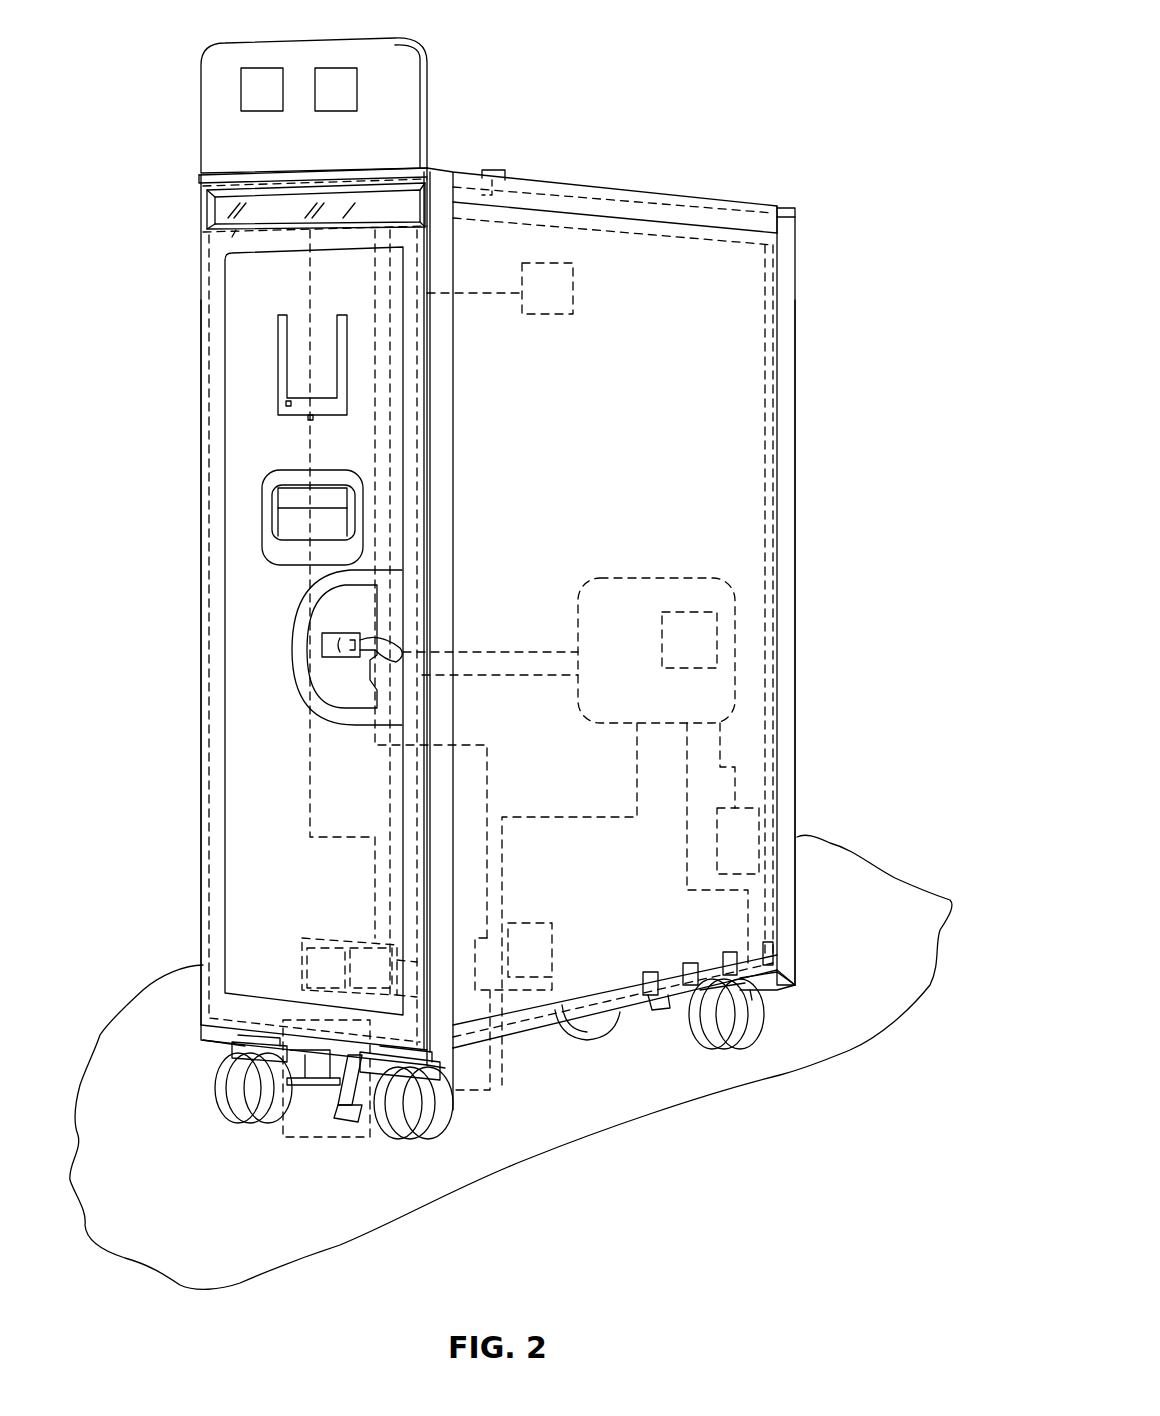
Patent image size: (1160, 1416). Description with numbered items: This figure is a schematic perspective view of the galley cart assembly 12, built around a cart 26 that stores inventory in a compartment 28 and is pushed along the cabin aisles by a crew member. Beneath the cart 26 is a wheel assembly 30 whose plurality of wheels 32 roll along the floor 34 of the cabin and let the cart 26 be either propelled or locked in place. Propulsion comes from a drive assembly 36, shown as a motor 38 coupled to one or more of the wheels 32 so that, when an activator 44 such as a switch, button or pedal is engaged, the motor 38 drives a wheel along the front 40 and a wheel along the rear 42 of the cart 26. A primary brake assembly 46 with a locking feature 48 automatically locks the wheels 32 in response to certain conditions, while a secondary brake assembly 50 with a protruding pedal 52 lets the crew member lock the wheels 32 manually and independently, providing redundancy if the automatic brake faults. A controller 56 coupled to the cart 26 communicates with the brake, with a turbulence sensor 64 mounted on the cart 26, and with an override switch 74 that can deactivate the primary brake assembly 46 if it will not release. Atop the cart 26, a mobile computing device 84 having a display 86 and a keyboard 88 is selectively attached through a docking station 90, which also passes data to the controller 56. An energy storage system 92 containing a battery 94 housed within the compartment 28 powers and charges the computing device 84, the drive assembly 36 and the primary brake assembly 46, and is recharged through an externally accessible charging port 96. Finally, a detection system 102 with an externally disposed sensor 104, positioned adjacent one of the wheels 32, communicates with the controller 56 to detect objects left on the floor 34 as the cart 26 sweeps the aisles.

The galley cart assembly 12 is at (822, 32).
The cart 26 is at (797, 235).
The compartment 28 is at (201, 641).
The wheel assembly 30 is at (252, 1198).
The plurality of wheels 32 is at (232, 1123).
The floor 34 is at (948, 905).
The drive assembly 36 is at (327, 938).
The motor 38 is at (388, 986).
The front 40 is at (227, 805).
The rear 42 is at (797, 660).
The activator 44 is at (343, 984).
The primary brake assembly 46 is at (530, 923).
The locking feature 48 is at (546, 967).
The secondary brake assembly 50 is at (320, 1140).
The pedal 52 is at (345, 1122).
The controller 56 is at (225, 263).
The sensor 64 is at (553, 315).
The override switch 74 is at (506, 172).
The mobile computing device 84 is at (428, 86).
The display 86 is at (279, 105).
The keyboard 88 is at (353, 105).
The docking station 90 is at (200, 185).
The energy storage system 92 is at (715, 578).
The battery 94 is at (706, 655).
The charging port 96 is at (754, 859).
The detection system 102 is at (800, 977).
The sensor 104 is at (787, 985).